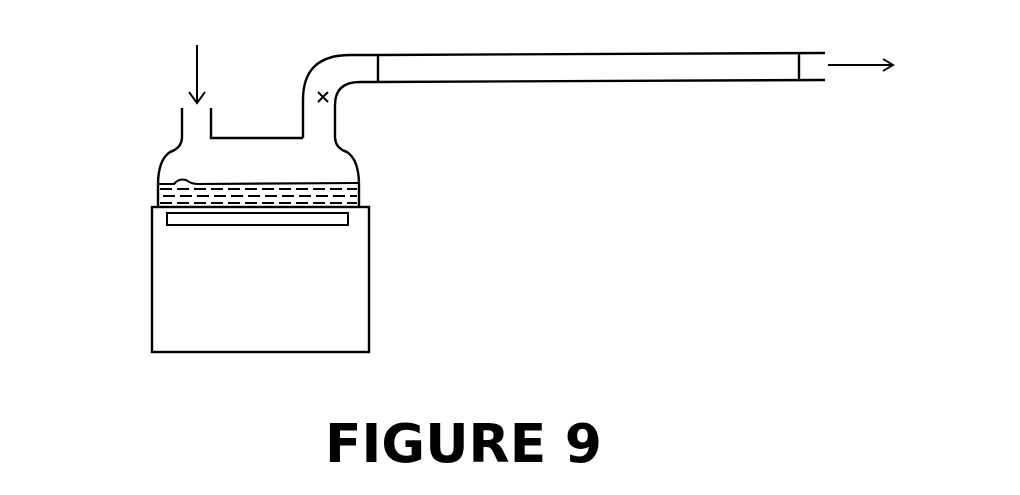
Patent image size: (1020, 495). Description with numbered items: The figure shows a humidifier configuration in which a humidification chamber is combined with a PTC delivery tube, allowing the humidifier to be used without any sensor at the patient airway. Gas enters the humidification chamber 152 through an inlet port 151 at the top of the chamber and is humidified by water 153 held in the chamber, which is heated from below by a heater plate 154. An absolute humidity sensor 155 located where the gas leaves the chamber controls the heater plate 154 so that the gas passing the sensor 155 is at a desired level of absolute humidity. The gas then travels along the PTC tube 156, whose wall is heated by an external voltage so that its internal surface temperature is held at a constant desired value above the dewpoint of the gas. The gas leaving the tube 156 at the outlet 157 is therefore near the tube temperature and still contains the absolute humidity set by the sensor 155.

The inlet port 151 is at (198, 120).
The humidification chamber 152 is at (165, 152).
The water 153 is at (180, 192).
The heater plate 154 is at (213, 218).
The absolute humidity sensor 155 is at (333, 100).
The PTC tube 156 is at (617, 82).
The outlet 157 is at (813, 68).